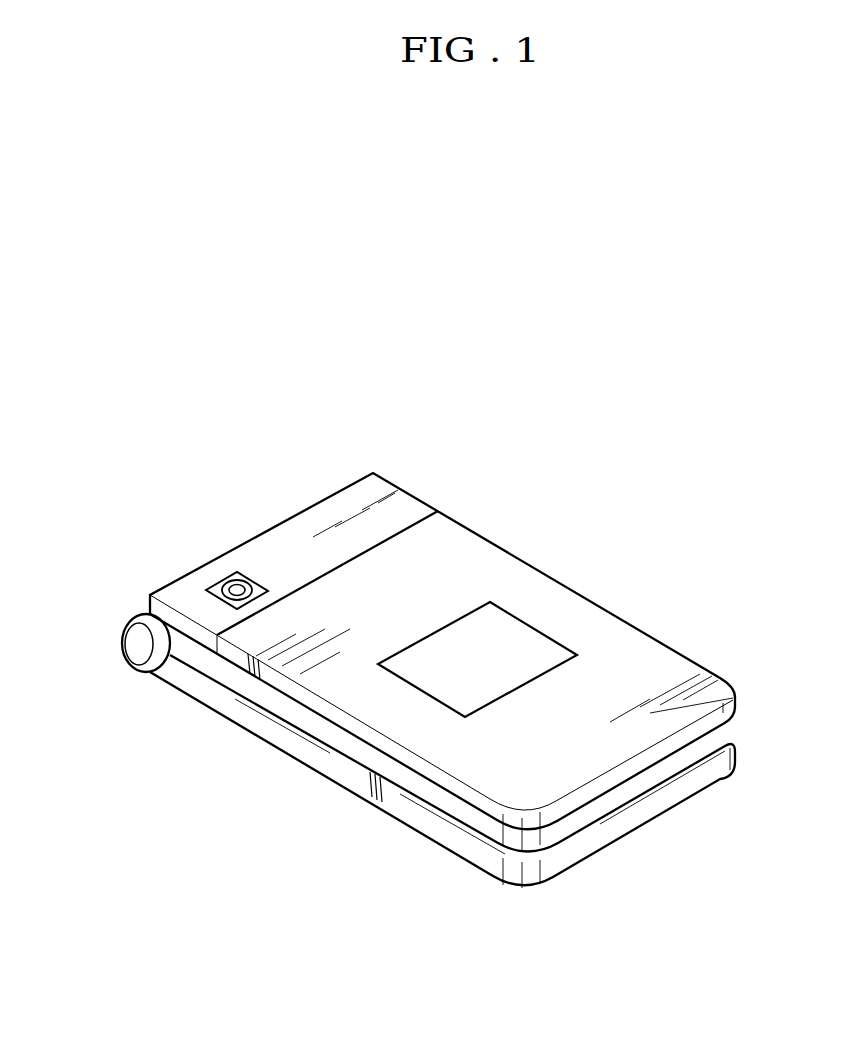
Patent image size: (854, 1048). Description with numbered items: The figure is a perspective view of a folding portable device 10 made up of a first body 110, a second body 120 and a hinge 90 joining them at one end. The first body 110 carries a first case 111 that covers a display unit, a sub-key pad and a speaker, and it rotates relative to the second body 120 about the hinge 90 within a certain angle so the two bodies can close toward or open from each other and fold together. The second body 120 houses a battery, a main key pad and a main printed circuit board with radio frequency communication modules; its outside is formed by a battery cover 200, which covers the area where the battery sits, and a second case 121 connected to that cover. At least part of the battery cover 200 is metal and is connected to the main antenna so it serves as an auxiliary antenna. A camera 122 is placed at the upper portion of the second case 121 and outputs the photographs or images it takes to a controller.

The portable device 10 is at (728, 456).
The hinge 90 is at (110, 608).
The first body 110 is at (241, 729).
The first case 111 is at (310, 753).
The second body 120 is at (420, 486).
The second case 121 is at (334, 511).
The camera 122 is at (218, 572).
The battery cover 200 is at (582, 615).